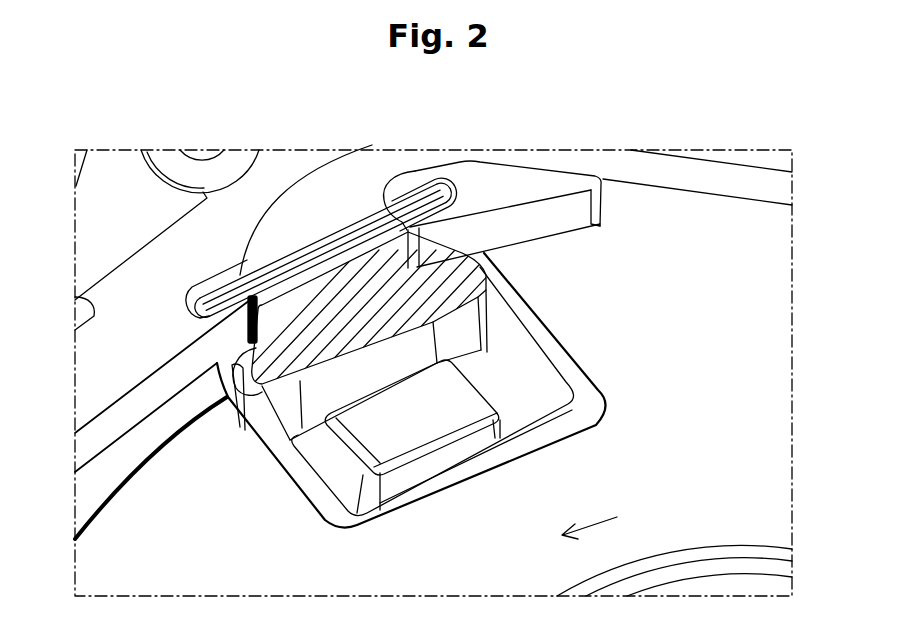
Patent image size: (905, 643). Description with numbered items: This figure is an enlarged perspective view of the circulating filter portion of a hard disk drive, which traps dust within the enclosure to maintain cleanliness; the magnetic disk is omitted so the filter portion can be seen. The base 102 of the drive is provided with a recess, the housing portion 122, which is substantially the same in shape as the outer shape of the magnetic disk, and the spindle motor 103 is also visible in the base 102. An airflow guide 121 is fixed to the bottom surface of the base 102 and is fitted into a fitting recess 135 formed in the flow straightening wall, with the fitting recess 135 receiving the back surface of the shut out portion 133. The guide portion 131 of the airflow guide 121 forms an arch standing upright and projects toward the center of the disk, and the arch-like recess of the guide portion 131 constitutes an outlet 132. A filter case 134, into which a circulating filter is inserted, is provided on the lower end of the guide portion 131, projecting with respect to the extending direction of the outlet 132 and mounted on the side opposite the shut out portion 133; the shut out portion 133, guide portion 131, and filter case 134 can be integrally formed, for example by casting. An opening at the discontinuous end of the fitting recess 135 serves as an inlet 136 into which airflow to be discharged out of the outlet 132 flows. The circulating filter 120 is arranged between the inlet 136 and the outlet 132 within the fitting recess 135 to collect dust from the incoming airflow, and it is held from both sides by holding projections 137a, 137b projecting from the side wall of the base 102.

The base 102 is at (78, 355).
The spindle motor 103 is at (695, 567).
The circulating filter 120 is at (292, 254).
The airflow guide 121 is at (305, 472).
The housing portion 122 is at (775, 263).
The guide portion 131 is at (253, 413).
The outlet 132 is at (413, 347).
The shut out portion 133 is at (365, 243).
The filter case 134 is at (428, 470).
The fitting recess 135 is at (306, 182).
The inlet 136 is at (606, 174).
The holding projection 137a is at (237, 298).
The holding projection 137b is at (402, 180).